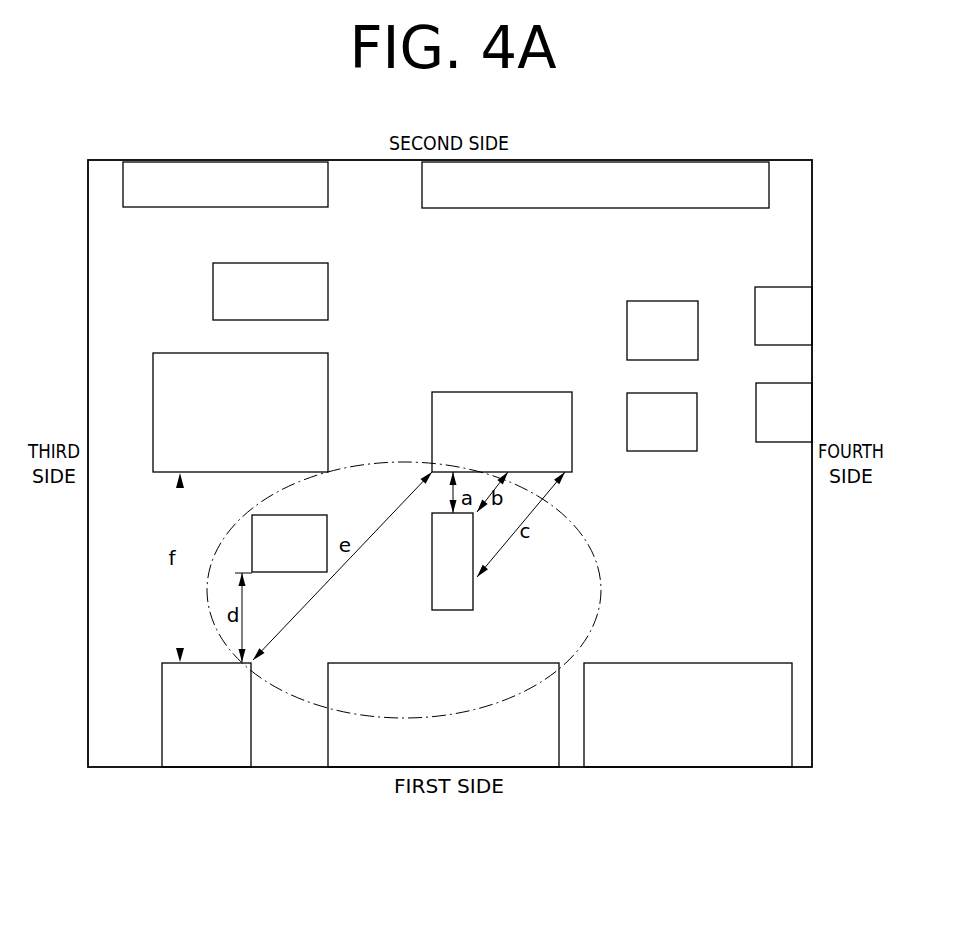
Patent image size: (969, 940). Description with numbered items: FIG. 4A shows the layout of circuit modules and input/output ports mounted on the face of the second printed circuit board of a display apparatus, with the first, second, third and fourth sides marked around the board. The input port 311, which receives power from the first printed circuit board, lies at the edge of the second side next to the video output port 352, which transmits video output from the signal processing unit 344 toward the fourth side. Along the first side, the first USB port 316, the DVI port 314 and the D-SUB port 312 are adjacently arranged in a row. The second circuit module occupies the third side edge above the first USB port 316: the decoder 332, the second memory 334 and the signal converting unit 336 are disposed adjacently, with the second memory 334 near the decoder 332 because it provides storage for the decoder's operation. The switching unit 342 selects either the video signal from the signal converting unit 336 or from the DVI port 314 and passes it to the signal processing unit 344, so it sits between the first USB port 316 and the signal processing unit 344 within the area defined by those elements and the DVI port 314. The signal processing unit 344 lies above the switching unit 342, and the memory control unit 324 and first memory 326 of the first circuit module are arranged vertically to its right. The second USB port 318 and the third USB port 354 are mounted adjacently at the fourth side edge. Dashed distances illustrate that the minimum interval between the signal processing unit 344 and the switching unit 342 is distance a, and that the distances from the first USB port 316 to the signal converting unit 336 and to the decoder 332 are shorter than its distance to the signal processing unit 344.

The input port 311 is at (225, 184).
The video output port 352 is at (595, 185).
The second memory 334 is at (270, 291).
The memory control unit 324 is at (662, 330).
The third USB port 354 is at (783, 316).
The decoder 332 is at (240, 412).
The signal processing unit 344 is at (502, 432).
The first memory 326 is at (662, 422).
The second USB port 318 is at (784, 412).
The signal converting unit 336 is at (289, 543).
The switching unit 342 is at (452, 561).
The first USB port 316 is at (206, 715).
The DVI port 314 is at (443, 715).
The D-SUB port 312 is at (688, 715).